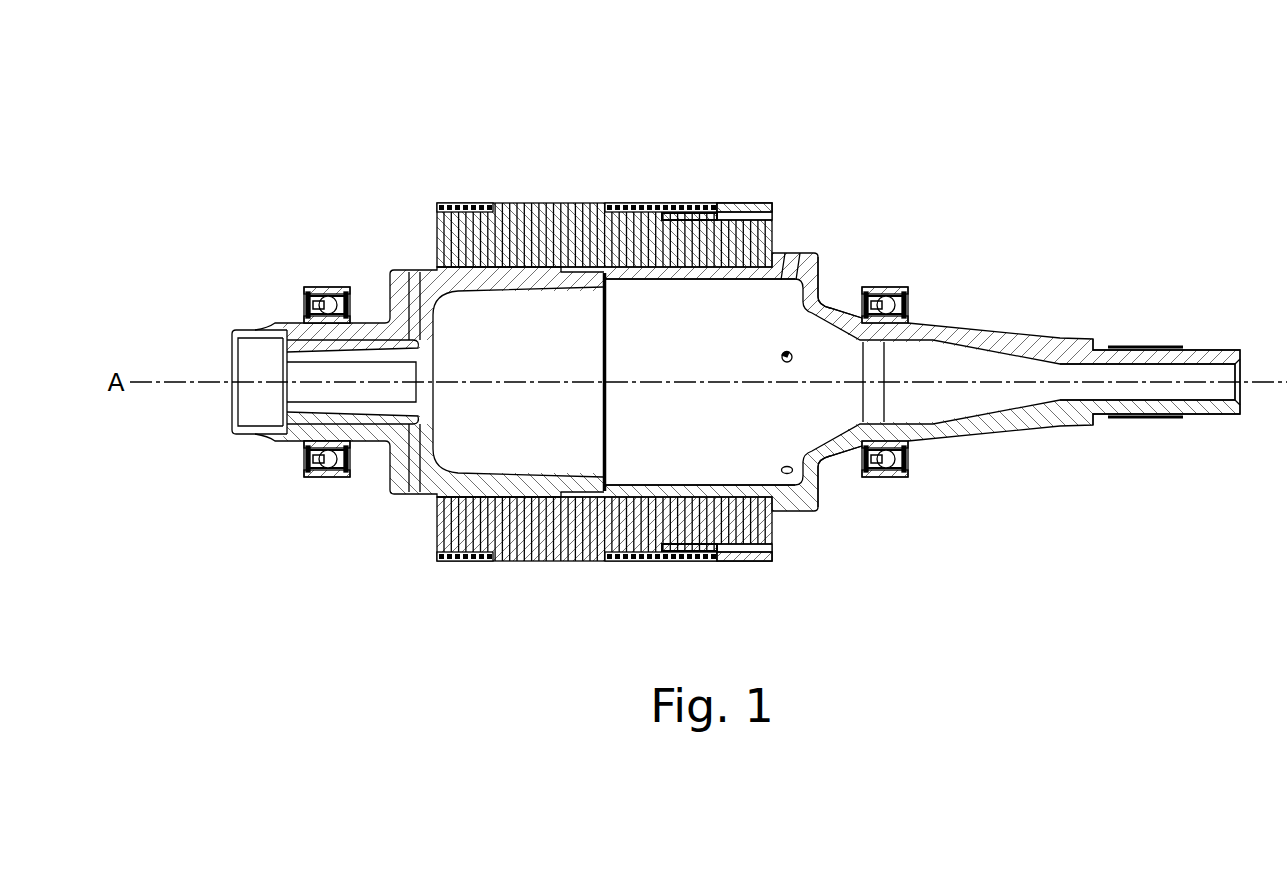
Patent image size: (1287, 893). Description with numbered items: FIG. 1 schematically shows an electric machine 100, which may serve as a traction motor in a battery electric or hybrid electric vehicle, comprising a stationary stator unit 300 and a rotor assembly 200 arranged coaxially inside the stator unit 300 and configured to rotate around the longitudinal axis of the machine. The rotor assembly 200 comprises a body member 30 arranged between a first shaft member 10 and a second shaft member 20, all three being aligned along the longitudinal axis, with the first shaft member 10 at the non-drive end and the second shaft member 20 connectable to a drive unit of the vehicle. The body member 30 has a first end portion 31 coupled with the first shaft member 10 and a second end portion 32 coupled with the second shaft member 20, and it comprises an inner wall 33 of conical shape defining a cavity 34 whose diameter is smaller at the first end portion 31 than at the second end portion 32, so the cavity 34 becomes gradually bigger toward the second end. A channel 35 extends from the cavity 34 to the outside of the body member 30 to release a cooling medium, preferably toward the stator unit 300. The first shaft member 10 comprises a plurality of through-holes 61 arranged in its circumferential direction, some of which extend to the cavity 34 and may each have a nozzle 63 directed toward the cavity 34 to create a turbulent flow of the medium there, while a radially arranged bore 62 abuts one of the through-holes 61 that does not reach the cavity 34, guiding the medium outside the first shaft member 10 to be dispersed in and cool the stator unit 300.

The first shaft member 10 is at (262, 404).
The second shaft member 20 is at (1022, 393).
The body member 30 is at (770, 460).
The first end portion 31 is at (462, 456).
The second end portion 32 is at (810, 440).
The inner wall 33 is at (506, 297).
The cavity 34 is at (636, 312).
The channel 35 is at (790, 250).
The through-holes 61 is at (388, 345).
The bore 62 is at (412, 274).
The nozzle 63 is at (433, 425).
The electric machine 100 is at (1212, 123).
The rotor assembly 200 is at (938, 198).
The stator unit 300 is at (545, 572).